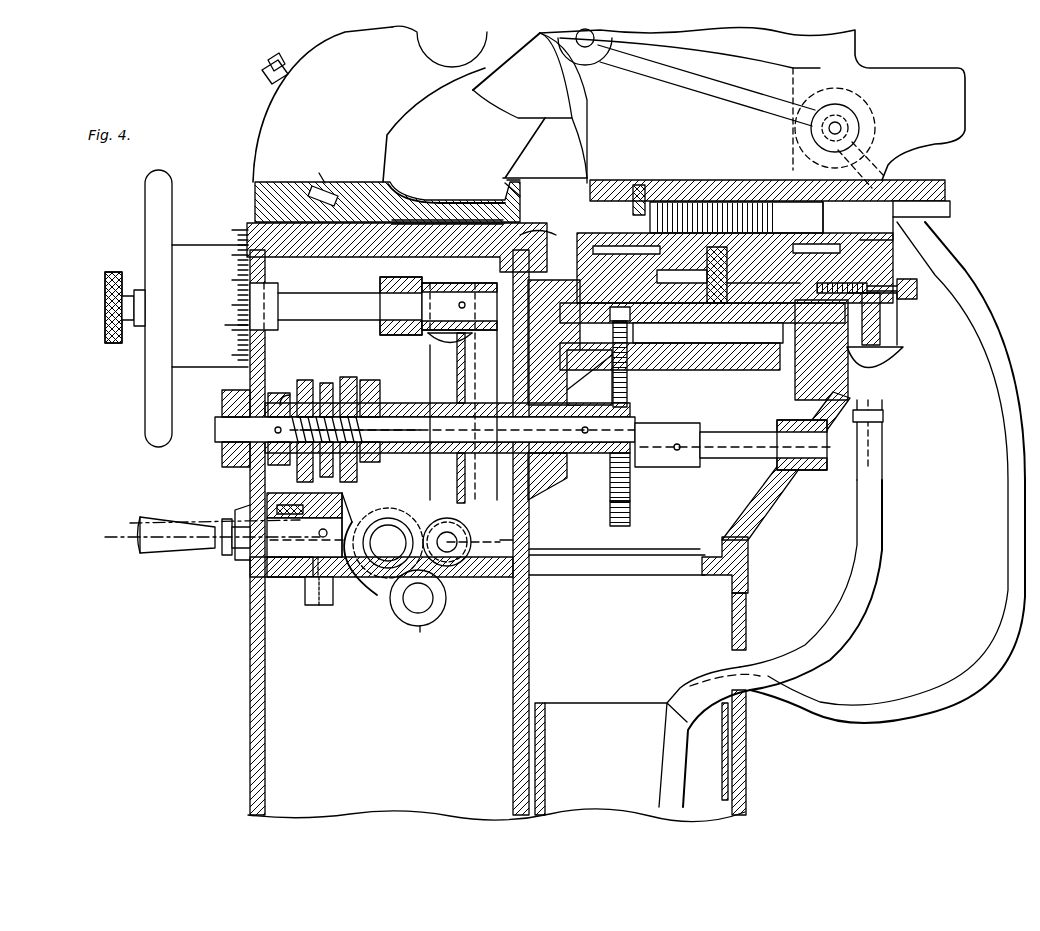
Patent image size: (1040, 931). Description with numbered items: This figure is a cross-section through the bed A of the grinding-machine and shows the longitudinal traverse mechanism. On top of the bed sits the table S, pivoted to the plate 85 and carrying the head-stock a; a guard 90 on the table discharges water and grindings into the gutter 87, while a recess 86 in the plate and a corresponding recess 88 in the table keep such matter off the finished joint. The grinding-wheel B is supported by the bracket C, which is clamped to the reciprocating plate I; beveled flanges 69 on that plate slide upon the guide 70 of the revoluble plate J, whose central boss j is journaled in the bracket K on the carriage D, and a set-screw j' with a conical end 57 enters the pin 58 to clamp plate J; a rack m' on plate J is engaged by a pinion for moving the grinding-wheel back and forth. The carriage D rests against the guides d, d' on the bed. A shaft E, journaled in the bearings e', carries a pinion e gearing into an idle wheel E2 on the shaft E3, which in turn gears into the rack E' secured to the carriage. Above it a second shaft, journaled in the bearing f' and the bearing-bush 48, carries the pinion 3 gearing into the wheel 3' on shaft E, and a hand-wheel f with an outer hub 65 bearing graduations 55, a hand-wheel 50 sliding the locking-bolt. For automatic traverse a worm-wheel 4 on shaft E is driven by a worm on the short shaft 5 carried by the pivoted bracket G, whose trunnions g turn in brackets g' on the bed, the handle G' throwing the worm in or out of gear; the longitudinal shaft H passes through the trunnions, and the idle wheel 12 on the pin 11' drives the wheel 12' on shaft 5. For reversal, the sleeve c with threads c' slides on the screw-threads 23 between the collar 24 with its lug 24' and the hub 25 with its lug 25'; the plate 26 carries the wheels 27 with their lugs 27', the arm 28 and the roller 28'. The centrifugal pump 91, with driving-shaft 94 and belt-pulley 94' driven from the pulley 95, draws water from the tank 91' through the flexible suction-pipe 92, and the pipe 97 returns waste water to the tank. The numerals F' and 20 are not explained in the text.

The bed A is at (250, 664).
The head-stock a is at (370, 104).
The table S is at (296, 186).
The guard 90 is at (400, 180).
The recess 86 is at (440, 222).
The recess 88 is at (480, 222).
The gutter 87 is at (530, 230).
The grinding-wheel B is at (482, 98).
The grinding-wheel bracket C is at (752, 105).
The belt-pulley 95 is at (584, 58).
The driving-shaft 94 is at (858, 128).
The centrifugal pump 91 is at (855, 119).
The belt-pulley 94' is at (823, 162).
The reciprocating plate I is at (948, 188).
The beveled flanges 69 is at (950, 212).
The rack m' is at (728, 209).
The guide 70 is at (852, 217).
The pin 58 is at (716, 305).
The conical end 57 is at (735, 295).
The bracket K is at (840, 287).
The central boss j is at (879, 302).
The set-screw j' is at (916, 296).
The revoluble plate J is at (875, 307).
The guide d is at (570, 342).
The toothed rack E' is at (702, 355).
The carriage D is at (715, 327).
The guide d' is at (806, 350).
The shaft E is at (420, 428).
The screw-threads 23 is at (385, 431).
The shaft E3 is at (732, 445).
The bearings e' is at (547, 476).
The toothed pinion e is at (631, 477).
The idle toothed wheel E2 is at (630, 515).
The collar 24 is at (279, 433).
The lug 24' is at (281, 382).
The toothed wheels 27 is at (327, 419).
The plate 26 is at (328, 383).
The lug 27' is at (366, 372).
The screw-threaded sleeve c is at (321, 453).
The screw-threads c' is at (370, 460).
The hub 25 is at (430, 478).
The lug 25' is at (423, 359).
The bearing-bush 48 is at (278, 288).
The shaft F' is at (329, 314).
The bearing f' is at (412, 300).
The toothed pinion 3 is at (459, 296).
The worm-wheel 4 is at (432, 484).
The arm 28 is at (339, 502).
The bracket G is at (319, 534).
The screw 20 is at (352, 508).
The handle G' is at (212, 551).
The roller 28' is at (226, 515).
The longitudinal shaft H is at (388, 543).
The trunnions g is at (370, 609).
The brackets g' is at (357, 554).
The short shaft 5 is at (447, 542).
The toothed wheel 3' is at (476, 539).
The toothed wheel 12' is at (600, 547).
The pin 11' is at (418, 598).
The idle toothed wheel 12 is at (431, 637).
The pipe 97 is at (872, 586).
The flexible suction-pipe 92 is at (816, 700).
The tank 91' is at (631, 759).
The hand-wheel f is at (148, 308).
The outer hub 65 is at (210, 306).
The hand-wheel 50 is at (114, 272).
The plate 85 is at (246, 226).
The graduations 55 is at (243, 325).